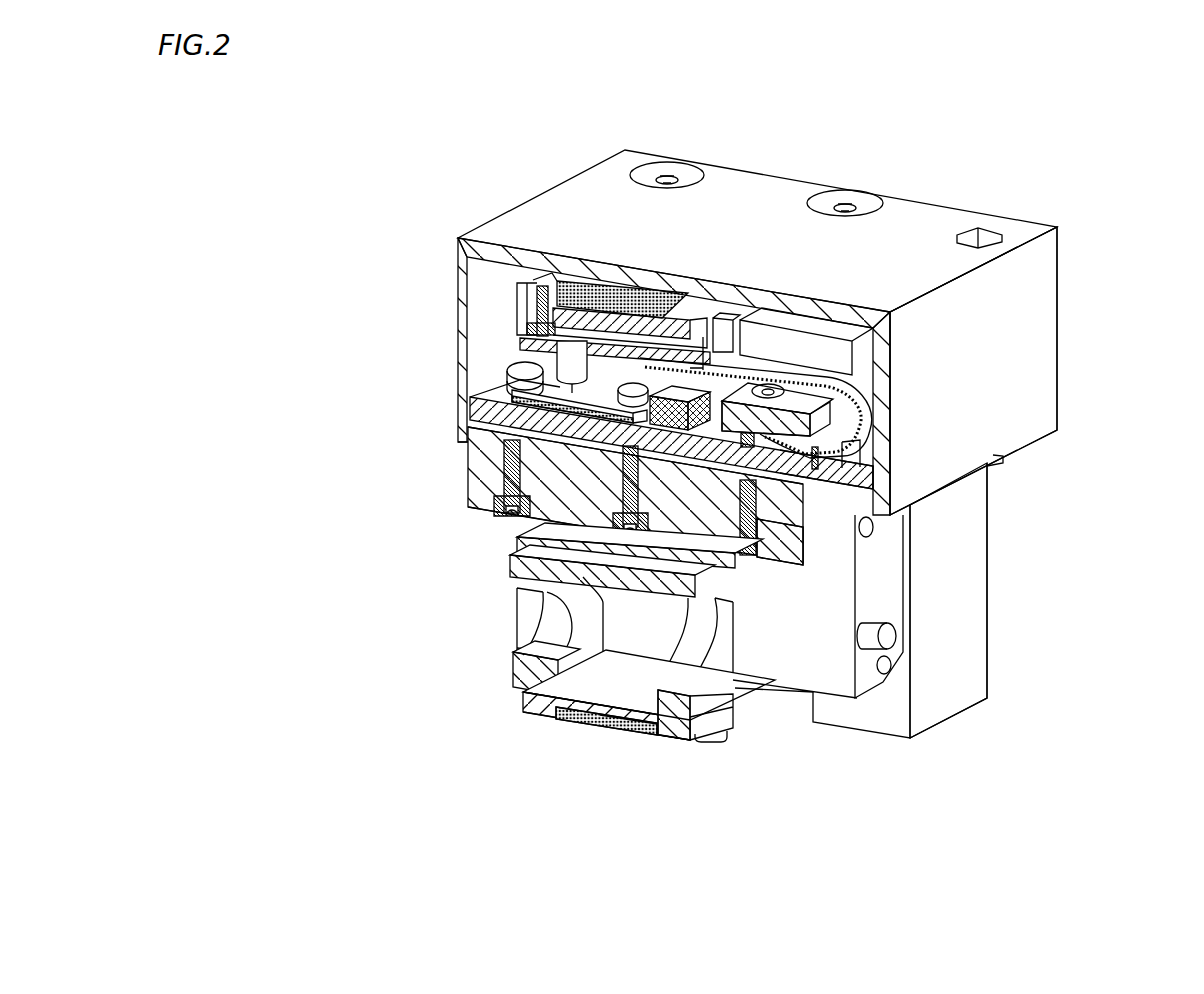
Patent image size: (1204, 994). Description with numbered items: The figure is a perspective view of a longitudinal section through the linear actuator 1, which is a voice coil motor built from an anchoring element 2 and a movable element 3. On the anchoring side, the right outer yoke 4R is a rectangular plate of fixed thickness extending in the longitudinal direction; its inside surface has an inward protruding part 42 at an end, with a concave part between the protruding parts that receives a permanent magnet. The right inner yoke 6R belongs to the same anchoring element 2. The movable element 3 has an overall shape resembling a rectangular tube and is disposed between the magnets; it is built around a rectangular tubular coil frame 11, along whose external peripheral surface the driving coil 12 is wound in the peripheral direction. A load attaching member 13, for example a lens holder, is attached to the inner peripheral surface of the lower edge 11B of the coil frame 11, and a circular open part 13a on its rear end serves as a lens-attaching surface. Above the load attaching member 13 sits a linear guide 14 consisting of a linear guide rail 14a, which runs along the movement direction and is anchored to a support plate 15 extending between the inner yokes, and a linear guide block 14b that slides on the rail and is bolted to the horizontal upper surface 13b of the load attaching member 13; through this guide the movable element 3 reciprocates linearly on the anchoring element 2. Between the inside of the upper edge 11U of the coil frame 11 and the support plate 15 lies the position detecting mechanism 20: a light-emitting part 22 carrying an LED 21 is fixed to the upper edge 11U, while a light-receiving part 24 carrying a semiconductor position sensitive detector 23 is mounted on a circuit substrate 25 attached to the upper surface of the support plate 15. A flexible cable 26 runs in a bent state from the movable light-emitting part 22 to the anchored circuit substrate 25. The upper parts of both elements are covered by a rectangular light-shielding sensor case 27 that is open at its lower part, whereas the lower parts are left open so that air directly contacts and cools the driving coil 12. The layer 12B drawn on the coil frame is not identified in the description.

The linear actuator 1 is at (1080, 367).
The anchoring element 2 is at (942, 730).
The movable element 3 is at (625, 734).
The right outer yoke 4R is at (989, 637).
The right inner yoke 6R is at (833, 677).
The coil frame 11 is at (690, 740).
The lower edge of the coil frame 11B is at (577, 701).
The upper edge of the coil frame 11U is at (620, 285).
The driving coil 12 is at (568, 723).
The lower layer 12B is at (590, 724).
The load attaching member 13 is at (506, 673).
The circular open part 13a is at (545, 615).
The horizontal upper surface 13b is at (513, 545).
The linear guide 14 is at (341, 476).
The linear guide rail 14a is at (472, 483).
The linear guide block 14b is at (517, 526).
The support plate 15 is at (805, 528).
The position detecting mechanism 20 is at (516, 338).
The LED 21 is at (516, 299).
The light-emitting part 22 is at (538, 363).
The semiconductor position sensitive detector 23 is at (505, 405).
The light-receiving part 24 is at (500, 393).
The circuit substrate 25 is at (865, 464).
The flexible cable 26 is at (746, 366).
The light-shielding sensor case 27 is at (1060, 246).
The protruding part 42 is at (864, 718).